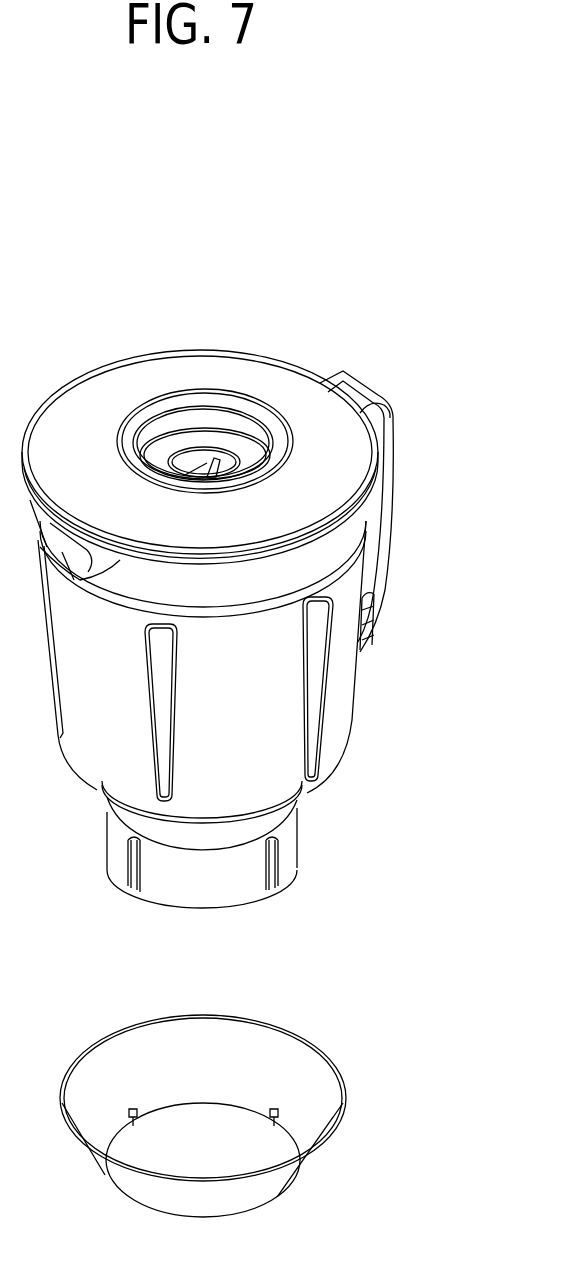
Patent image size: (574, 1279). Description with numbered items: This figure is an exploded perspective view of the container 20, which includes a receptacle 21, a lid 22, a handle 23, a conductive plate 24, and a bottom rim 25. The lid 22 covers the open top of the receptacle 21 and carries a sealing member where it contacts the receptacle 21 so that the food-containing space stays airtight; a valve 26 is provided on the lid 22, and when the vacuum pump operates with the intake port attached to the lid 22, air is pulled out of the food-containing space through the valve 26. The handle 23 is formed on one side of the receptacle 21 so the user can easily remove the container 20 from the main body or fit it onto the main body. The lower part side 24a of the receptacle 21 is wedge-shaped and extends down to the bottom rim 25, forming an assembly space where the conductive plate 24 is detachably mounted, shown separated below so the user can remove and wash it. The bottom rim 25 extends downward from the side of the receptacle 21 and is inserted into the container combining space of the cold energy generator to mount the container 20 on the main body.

The container 20 is at (183, 252).
The receptacle 21 is at (342, 697).
The lid 22 is at (255, 378).
The handle 23 is at (395, 556).
The conductive plate 24 is at (193, 1035).
The lower part side 24a is at (290, 820).
The bottom rim 25 is at (290, 843).
The valve 26 is at (210, 457).